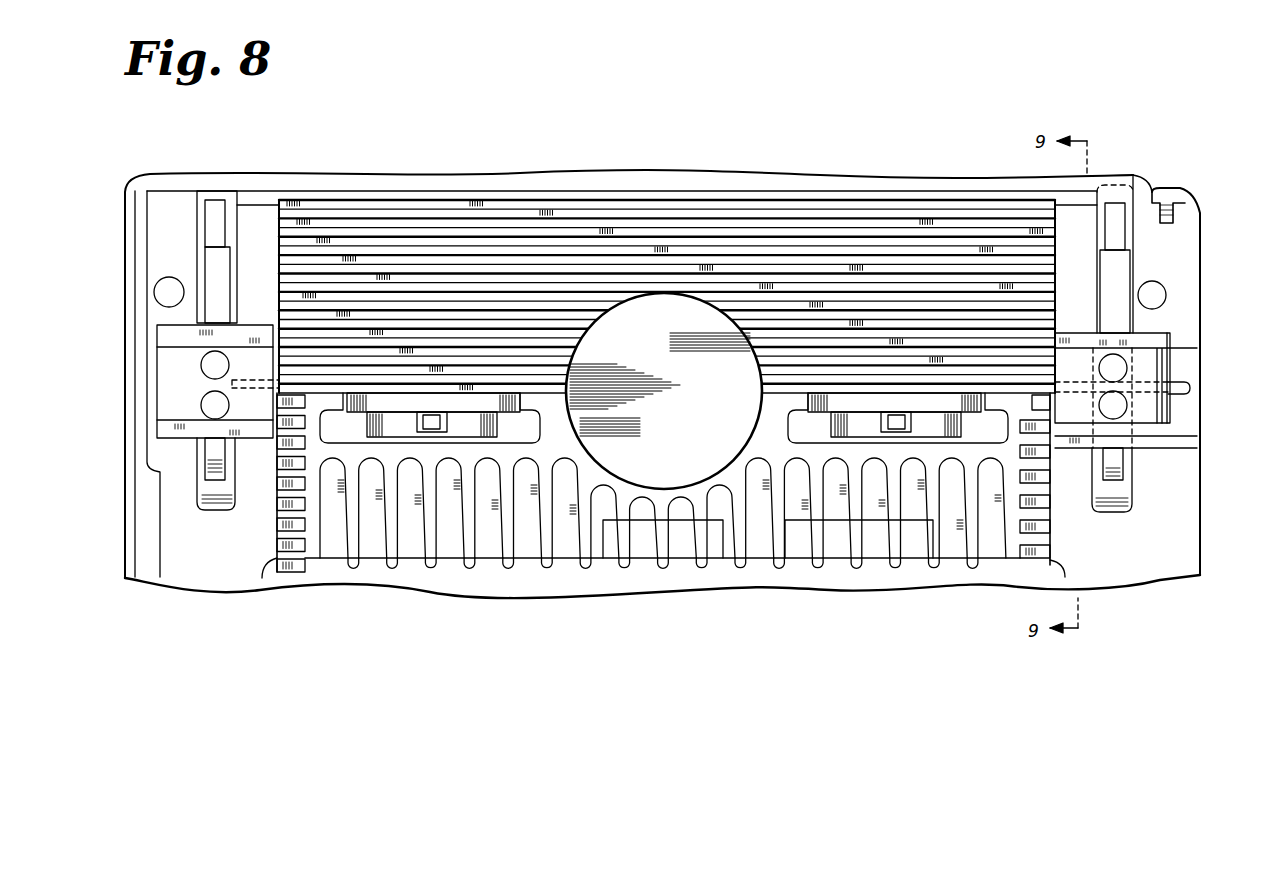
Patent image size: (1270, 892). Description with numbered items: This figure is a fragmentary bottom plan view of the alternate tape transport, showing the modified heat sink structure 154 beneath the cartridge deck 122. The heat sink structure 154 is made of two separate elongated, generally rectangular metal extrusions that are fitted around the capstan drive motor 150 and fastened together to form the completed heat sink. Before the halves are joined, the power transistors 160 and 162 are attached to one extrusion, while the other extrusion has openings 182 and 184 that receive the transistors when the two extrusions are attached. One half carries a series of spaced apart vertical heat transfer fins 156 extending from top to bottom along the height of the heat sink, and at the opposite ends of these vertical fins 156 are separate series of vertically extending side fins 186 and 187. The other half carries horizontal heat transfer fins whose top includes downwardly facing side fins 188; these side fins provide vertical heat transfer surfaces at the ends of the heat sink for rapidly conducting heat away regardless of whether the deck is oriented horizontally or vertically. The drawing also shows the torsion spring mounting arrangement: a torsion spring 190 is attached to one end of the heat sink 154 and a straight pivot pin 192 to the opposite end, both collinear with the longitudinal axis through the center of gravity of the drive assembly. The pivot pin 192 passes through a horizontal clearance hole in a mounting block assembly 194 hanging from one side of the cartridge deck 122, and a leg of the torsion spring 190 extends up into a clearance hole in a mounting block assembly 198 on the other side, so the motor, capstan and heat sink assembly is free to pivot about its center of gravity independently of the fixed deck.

The cartridge deck 122 is at (1178, 523).
The capstan drive motor 150 is at (663, 509).
The heat sink structure 154 is at (588, 212).
The vertical heat transfer fins 156 is at (820, 567).
The power transistor 160 is at (925, 520).
The power transistor 162 is at (495, 440).
The opening 182 is at (796, 437).
The opening 184 is at (530, 428).
The side fins 186 is at (1050, 488).
The side fins 187 is at (277, 505).
The downwardly facing side fins 188 is at (677, 245).
The torsion spring 190 is at (1188, 396).
The pivot pin 192 is at (236, 378).
The mounting block assembly 194 is at (170, 355).
The mounting block assembly 198 is at (1162, 371).